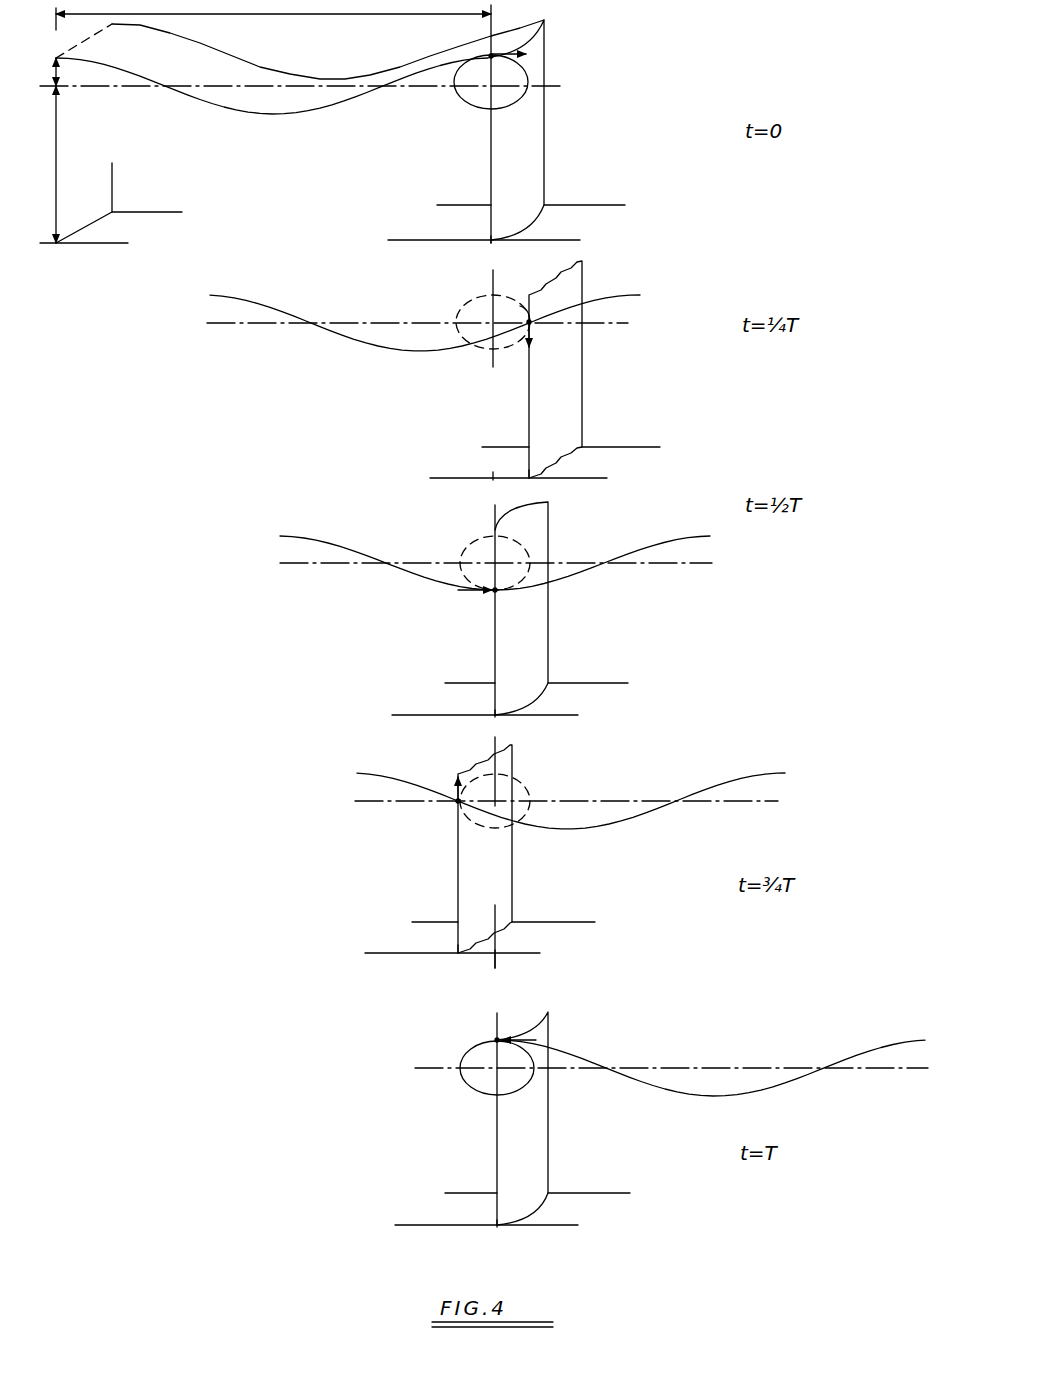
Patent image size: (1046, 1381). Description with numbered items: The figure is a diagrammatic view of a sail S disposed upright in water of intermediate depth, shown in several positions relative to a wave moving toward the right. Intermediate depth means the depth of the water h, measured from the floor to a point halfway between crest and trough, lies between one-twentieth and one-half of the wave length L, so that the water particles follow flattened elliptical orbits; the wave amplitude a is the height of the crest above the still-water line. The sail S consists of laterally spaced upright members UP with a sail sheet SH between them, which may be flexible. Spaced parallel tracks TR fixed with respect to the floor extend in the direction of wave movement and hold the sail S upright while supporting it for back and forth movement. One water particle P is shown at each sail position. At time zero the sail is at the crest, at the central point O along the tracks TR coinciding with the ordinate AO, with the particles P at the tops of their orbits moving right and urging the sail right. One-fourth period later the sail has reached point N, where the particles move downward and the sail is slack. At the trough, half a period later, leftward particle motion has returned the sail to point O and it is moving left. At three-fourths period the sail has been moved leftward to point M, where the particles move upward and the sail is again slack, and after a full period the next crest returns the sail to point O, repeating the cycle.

The wave length L is at (273, 16).
The wave amplitude a is at (65, 72).
The depth of the water h is at (54, 164).
The ordinate A is at (491, 614).
The water particle P is at (490, 54).
The sail S is at (550, 118).
The sail sheet SH is at (500, 126).
The upright members UP is at (491, 170).
The tracks TR is at (593, 207).
The central point O is at (494, 743).
The point N is at (530, 486).
The point M is at (454, 963).